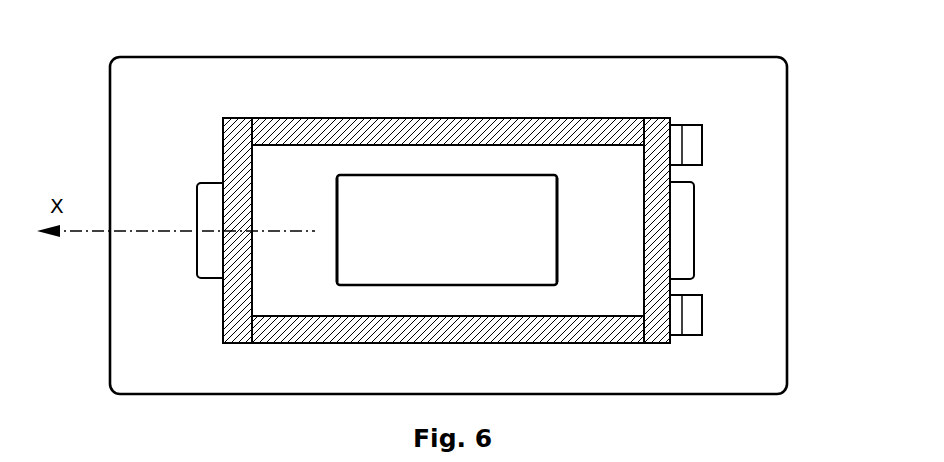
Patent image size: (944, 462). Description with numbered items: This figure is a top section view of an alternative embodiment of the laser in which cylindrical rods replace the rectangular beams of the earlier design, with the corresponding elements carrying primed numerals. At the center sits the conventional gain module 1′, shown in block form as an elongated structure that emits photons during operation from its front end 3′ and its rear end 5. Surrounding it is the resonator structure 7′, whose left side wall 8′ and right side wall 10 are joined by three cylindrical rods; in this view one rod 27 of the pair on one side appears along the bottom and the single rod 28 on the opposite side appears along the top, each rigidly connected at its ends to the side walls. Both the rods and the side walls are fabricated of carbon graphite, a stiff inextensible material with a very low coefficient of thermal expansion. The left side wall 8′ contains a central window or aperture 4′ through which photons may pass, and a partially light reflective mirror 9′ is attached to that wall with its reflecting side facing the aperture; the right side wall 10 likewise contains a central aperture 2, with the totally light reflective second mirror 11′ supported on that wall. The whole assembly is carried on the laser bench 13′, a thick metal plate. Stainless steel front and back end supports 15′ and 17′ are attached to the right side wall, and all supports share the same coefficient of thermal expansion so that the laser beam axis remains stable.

The gain module 1′ is at (447, 230).
The central aperture 2 is at (643, 233).
The front end 3′ is at (337, 213).
The central window or aperture 4′ is at (252, 234).
The rear end 5 is at (558, 238).
The resonator structure 7′ is at (446, 208).
The side wall 8′ is at (252, 167).
The mirror 9′ is at (197, 195).
The side wall 10 is at (642, 187).
The second mirror 11′ is at (697, 220).
The laser bench 13′ is at (788, 143).
The front end support 15′ is at (703, 152).
The back end support 17′ is at (703, 318).
The cylindrical rod 27 is at (307, 316).
The cylindrical rod 28 is at (357, 118).